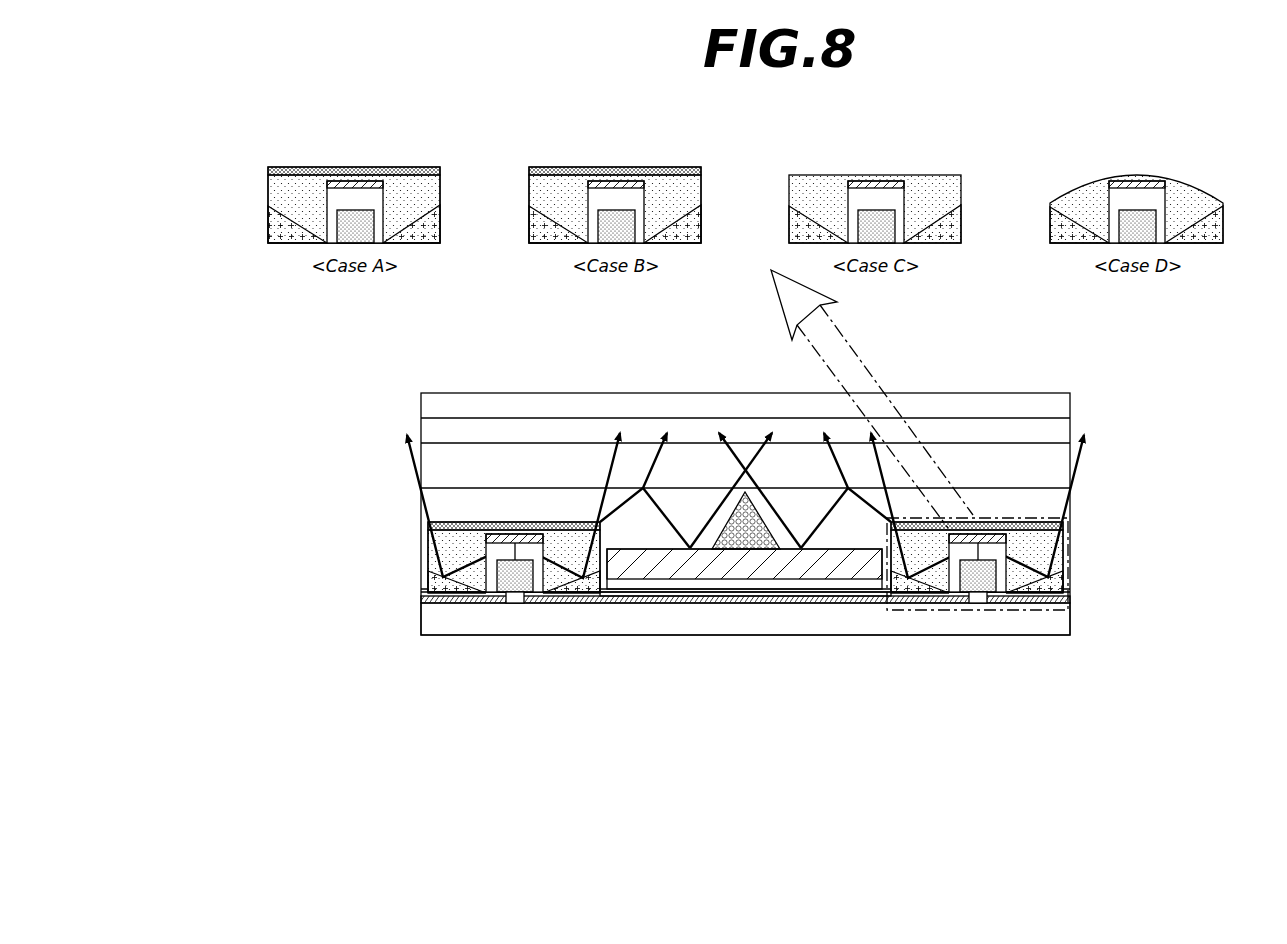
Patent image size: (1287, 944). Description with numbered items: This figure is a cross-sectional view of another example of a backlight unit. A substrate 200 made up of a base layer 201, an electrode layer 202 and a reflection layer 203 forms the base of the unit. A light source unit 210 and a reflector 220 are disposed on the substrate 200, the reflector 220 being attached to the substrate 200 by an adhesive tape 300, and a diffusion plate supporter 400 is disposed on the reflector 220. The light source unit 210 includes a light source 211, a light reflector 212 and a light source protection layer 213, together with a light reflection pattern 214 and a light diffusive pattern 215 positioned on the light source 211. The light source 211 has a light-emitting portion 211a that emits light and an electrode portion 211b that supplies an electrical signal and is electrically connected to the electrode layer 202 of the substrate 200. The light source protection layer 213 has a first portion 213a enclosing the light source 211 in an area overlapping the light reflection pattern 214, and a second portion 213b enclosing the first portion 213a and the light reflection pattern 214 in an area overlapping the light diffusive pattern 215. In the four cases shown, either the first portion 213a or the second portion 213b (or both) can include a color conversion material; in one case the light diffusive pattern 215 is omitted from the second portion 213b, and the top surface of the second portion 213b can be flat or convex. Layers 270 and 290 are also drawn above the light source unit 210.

The substrate 200 is at (745, 655).
The base layer 201 is at (632, 620).
The electrode layer 202 is at (680, 600).
The reflection layer 203 is at (633, 675).
The light source unit 210 is at (768, 424).
The light source 211 is at (810, 457).
The light-emitting portion 211a is at (488, 572).
The electrode portion 211b is at (500, 597).
The light reflector 212 is at (433, 230).
The light source protection layer 213 is at (737, 401).
The first portion of the light source protection layer 213a is at (738, 358).
The second portion of the light source protection layer 213b is at (297, 183).
The light reflection pattern 214 is at (363, 180).
The light diffusive pattern 215 is at (442, 169).
The reflector 220 is at (858, 600).
The diffuser plate 270 is at (428, 466).
The optical sheet 290 is at (428, 430).
The adhesive tape 300 is at (817, 585).
The diffusion plate supporter 400 is at (748, 545).